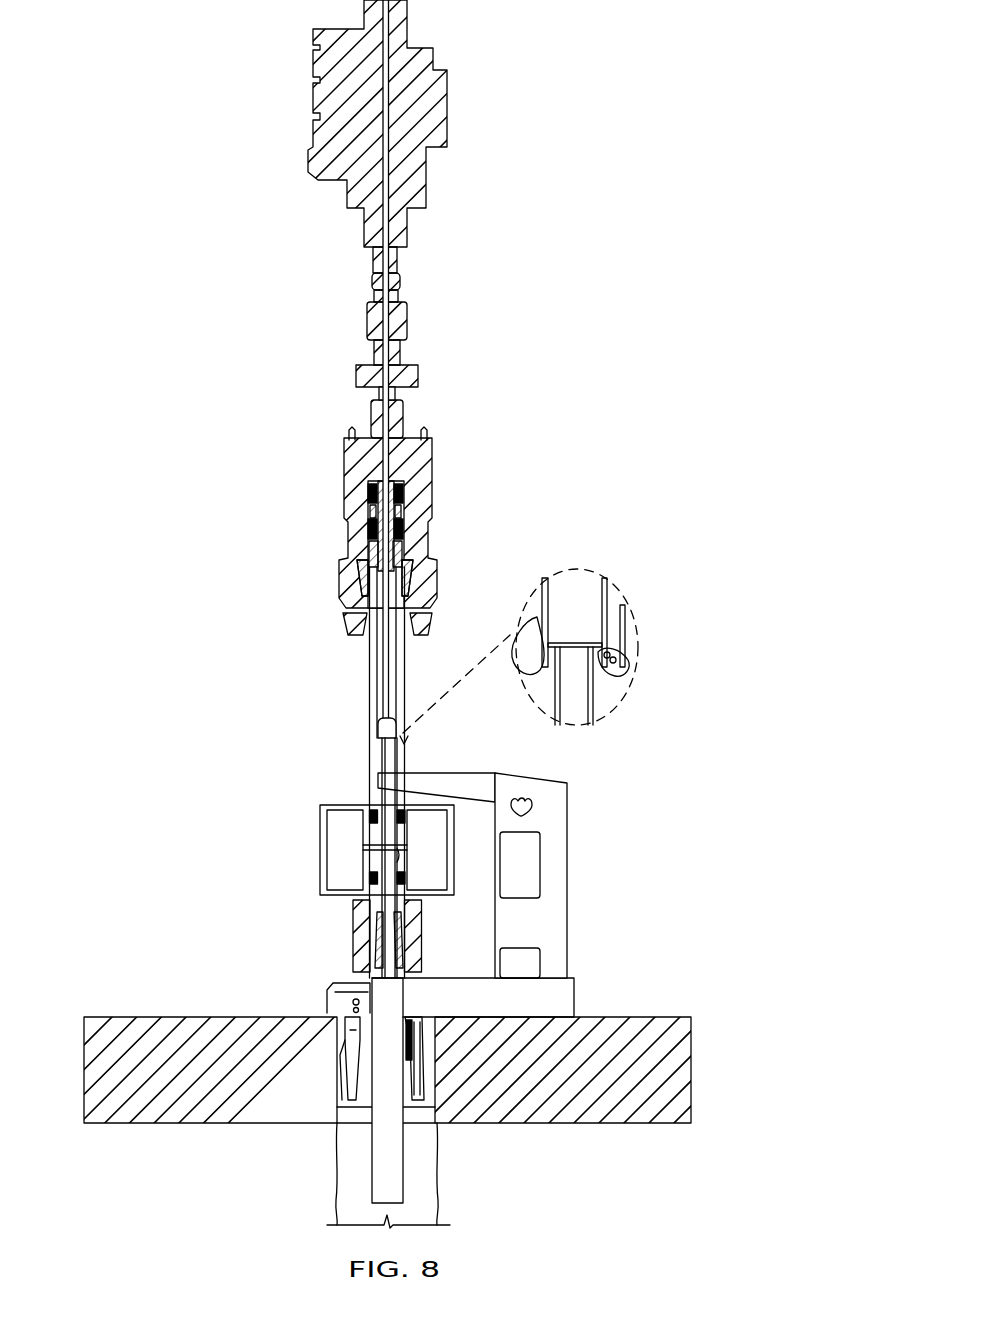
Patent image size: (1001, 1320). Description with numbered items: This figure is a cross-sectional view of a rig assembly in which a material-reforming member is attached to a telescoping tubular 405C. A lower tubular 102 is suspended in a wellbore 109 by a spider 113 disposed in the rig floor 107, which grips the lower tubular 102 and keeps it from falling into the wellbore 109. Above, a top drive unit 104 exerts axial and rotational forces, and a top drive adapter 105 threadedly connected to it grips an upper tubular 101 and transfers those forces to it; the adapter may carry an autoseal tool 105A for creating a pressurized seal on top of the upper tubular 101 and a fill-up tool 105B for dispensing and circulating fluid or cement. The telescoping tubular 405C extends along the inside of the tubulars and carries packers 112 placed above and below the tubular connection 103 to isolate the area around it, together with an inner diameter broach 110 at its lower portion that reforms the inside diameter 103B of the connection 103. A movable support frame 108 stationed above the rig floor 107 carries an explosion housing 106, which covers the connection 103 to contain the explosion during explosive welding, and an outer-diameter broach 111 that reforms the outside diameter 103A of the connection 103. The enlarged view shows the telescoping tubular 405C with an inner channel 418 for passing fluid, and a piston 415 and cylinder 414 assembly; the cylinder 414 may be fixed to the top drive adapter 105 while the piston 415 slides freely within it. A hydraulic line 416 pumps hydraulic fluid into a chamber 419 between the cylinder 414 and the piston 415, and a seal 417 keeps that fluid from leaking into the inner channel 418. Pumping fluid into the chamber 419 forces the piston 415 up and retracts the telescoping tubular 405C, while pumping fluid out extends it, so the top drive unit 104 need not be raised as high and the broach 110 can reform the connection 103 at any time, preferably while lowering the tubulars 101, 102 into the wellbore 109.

The upper tubular 101 is at (370, 678).
The lower tubular 102 is at (405, 1148).
The tubular connection 103 is at (357, 830).
The outside diameter 103A is at (370, 848).
The inside diameter 103B is at (405, 860).
The top drive unit 104 is at (420, 100).
The top drive adapter 105 is at (313, 483).
The autoseal tool 105A is at (347, 543).
The fill-up tool 105B is at (365, 527).
The explosion housing 106 is at (320, 878).
The rig floor 107 is at (637, 1018).
The support frame 108 is at (555, 922).
The wellbore 109 is at (348, 1197).
The inner diameter broach 110 is at (353, 932).
The outer-diameter broach 111 is at (353, 960).
The packers 112 is at (398, 815).
The spider 113 is at (357, 1062).
The telescoping tubular 405C is at (378, 638).
The cylinder 414 is at (610, 585).
The piston 415 is at (597, 712).
The hydraulic line 416 is at (625, 620).
The seal 417 is at (525, 632).
The inner channel 418 is at (562, 585).
The chamber 419 is at (590, 638).